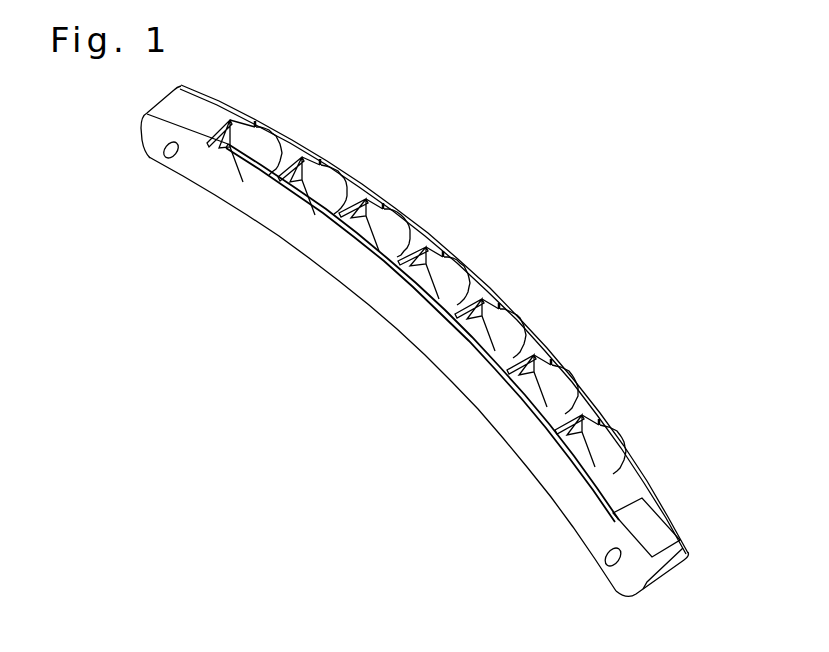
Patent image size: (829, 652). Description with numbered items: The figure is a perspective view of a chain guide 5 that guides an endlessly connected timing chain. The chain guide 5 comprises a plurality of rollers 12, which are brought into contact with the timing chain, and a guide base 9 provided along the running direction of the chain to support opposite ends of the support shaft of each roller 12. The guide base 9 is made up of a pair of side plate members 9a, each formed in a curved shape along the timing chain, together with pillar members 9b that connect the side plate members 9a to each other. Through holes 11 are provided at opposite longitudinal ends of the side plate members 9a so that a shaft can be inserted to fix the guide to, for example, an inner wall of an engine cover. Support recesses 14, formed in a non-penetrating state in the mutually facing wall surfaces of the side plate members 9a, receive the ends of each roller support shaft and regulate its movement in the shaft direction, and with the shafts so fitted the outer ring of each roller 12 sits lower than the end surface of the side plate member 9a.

The chain guide 5 is at (411, 340).
The guide base 9 is at (411, 341).
The side plate member 9a is at (340, 258).
The pillar member 9b is at (418, 257).
The through hole 11 is at (166, 157).
The roller 12 is at (545, 399).
The support recess 14 is at (470, 241).